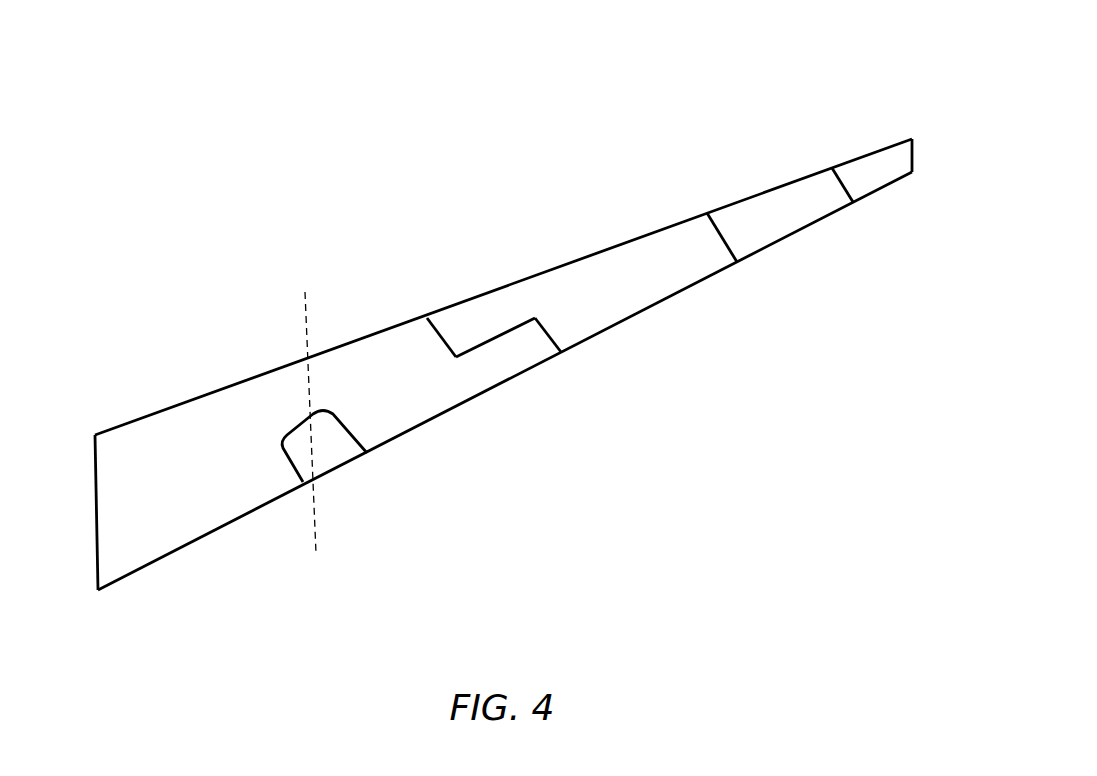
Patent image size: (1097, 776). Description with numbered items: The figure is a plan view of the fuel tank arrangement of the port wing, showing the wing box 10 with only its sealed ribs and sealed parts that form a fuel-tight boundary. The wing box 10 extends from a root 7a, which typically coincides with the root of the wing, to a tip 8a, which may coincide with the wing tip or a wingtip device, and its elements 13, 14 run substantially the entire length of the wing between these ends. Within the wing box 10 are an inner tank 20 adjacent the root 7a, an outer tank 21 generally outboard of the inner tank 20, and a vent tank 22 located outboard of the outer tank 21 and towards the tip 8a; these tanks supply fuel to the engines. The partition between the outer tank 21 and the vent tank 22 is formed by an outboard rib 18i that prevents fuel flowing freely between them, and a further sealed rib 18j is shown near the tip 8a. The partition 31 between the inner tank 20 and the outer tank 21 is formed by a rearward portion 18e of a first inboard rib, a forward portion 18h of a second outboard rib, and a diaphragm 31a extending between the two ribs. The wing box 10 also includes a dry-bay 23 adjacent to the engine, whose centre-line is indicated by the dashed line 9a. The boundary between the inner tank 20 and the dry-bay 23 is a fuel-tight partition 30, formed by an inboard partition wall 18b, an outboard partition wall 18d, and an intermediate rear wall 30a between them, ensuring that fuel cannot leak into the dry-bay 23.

The wing box 10 is at (352, 152).
The wing box element 14 is at (538, 274).
The wing box element 13 is at (680, 296).
The root 7a is at (97, 512).
The tip 8a is at (915, 152).
The inner tank 20 is at (223, 410).
The outer tank 21 is at (640, 262).
The vent tank 22 is at (785, 215).
The engine centre-line 9a is at (305, 294).
The fuel-tight partition 30 is at (270, 458).
The rear wall 30a is at (327, 412).
The dry-bay 23 is at (298, 452).
The partition wall 18b is at (297, 470).
The partition wall 18d is at (354, 437).
The rearward portion of first rib 18e is at (440, 335).
The forward portion of second rib 18h is at (548, 333).
The outboard rib 18i is at (718, 227).
The sealed rib 18j is at (840, 180).
The partition 31 is at (475, 373).
The diaphragm 31a is at (503, 334).